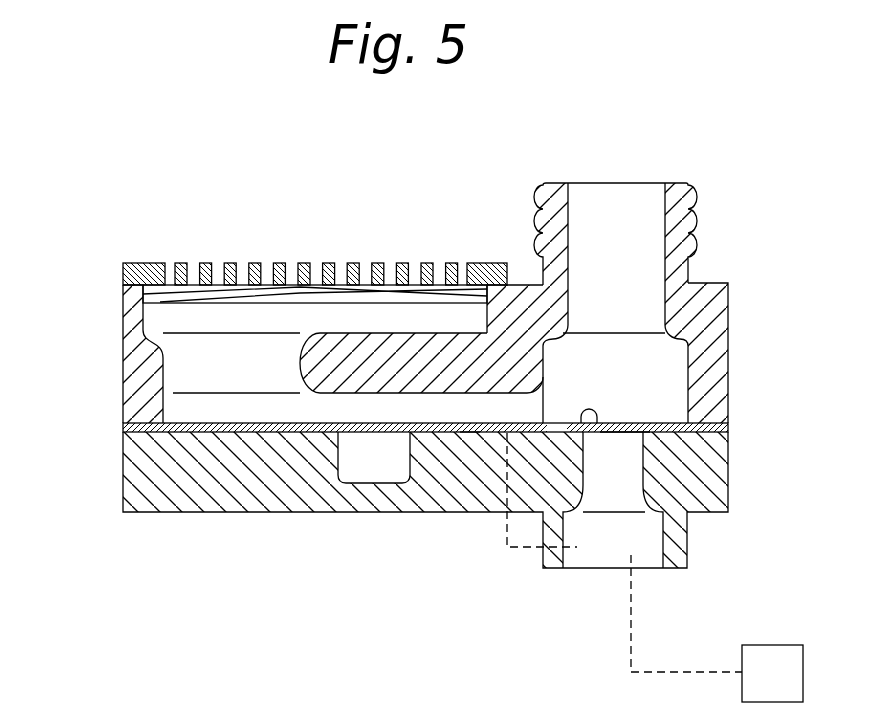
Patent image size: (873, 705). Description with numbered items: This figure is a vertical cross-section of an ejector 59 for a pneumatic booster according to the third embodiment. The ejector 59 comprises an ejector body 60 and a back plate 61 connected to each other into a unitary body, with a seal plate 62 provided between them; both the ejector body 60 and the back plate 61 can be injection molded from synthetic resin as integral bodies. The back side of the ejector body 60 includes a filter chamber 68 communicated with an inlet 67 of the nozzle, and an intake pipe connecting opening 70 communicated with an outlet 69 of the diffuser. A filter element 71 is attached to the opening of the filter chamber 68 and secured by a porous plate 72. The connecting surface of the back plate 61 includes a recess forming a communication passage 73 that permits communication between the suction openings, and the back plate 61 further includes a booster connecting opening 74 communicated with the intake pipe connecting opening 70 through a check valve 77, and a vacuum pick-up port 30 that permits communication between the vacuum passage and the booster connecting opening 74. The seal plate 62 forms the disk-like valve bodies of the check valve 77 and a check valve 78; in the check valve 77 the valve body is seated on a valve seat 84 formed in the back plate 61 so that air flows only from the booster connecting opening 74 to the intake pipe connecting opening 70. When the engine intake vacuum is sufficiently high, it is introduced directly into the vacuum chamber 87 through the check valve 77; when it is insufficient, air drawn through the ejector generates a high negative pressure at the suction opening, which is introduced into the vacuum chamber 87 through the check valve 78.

The ejector 59 is at (336, 189).
The ejector body 60 is at (133, 327).
The back plate 61 is at (150, 478).
The seal plate 62 is at (128, 426).
The inlet 67 is at (183, 405).
The filter chamber 68 is at (287, 320).
The outlet 69 is at (657, 380).
The intake pipe connecting opening 70 is at (665, 216).
The filter element 71 is at (171, 296).
The porous plate 72 is at (143, 264).
The communication passage 73 is at (376, 478).
The booster connecting opening 74 is at (645, 550).
The check valve 77 is at (631, 439).
The check valve 78 is at (468, 447).
The vacuum pick-up port 30 is at (496, 478).
The valve seat 84 is at (597, 423).
The vacuum chamber 87 is at (717, 628).